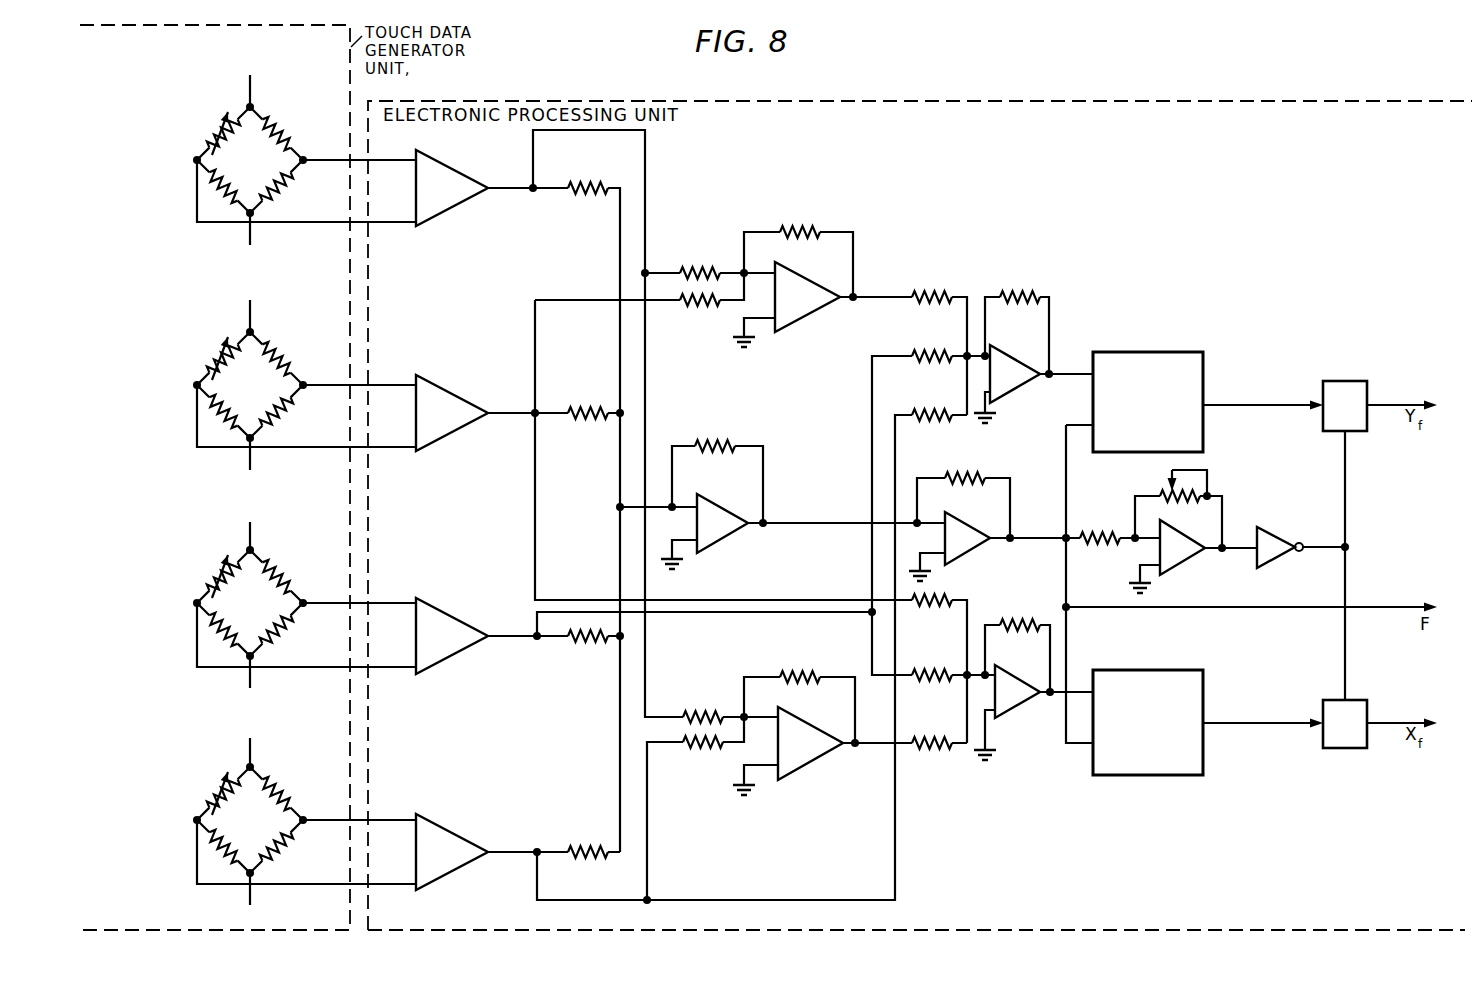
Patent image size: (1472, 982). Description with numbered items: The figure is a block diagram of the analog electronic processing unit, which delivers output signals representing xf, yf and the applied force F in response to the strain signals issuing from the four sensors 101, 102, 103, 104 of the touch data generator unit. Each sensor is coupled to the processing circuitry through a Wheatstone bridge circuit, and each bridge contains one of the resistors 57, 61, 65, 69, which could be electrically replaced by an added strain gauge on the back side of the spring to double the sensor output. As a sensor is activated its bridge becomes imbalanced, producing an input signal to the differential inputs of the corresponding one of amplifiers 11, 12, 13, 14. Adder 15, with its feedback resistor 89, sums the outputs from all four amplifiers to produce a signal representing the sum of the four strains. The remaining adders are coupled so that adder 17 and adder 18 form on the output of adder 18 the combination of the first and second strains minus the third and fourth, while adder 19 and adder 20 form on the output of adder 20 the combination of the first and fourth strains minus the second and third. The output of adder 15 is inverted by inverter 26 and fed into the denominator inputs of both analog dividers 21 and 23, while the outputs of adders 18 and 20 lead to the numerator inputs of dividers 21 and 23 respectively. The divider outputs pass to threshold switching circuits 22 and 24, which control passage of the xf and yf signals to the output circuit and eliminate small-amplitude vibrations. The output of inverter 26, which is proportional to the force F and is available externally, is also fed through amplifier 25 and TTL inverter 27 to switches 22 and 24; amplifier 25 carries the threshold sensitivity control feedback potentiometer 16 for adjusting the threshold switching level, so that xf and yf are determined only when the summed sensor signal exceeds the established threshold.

The sensor 101 is at (215, 141).
The sensor 102 is at (218, 369).
The sensor 103 is at (220, 570).
The sensor 104 is at (220, 794).
The resistor 57 is at (229, 193).
The resistor 61 is at (229, 418).
The resistor 65 is at (229, 636).
The resistor 69 is at (229, 853).
The amplifier 11 is at (424, 223).
The amplifier 12 is at (434, 458).
The amplifier 13 is at (436, 680).
The amplifier 14 is at (432, 820).
The adder 15 is at (728, 492).
The threshold sensitivity control feedback potentiometer 16 is at (1197, 487).
The adder 17 is at (791, 320).
The adder 18 is at (1036, 357).
The adder 19 is at (797, 780).
The adder 20 is at (1010, 700).
The analog divider 21 is at (1148, 366).
The threshold switching circuit 22 is at (1350, 390).
The analog divider 23 is at (1138, 682).
The threshold switching circuit 24 is at (1345, 737).
The amplifier 25 is at (1233, 519).
The inverter 26 is at (953, 558).
The TTL inverter 27 is at (1282, 542).
The feedback resistor 89 is at (702, 442).